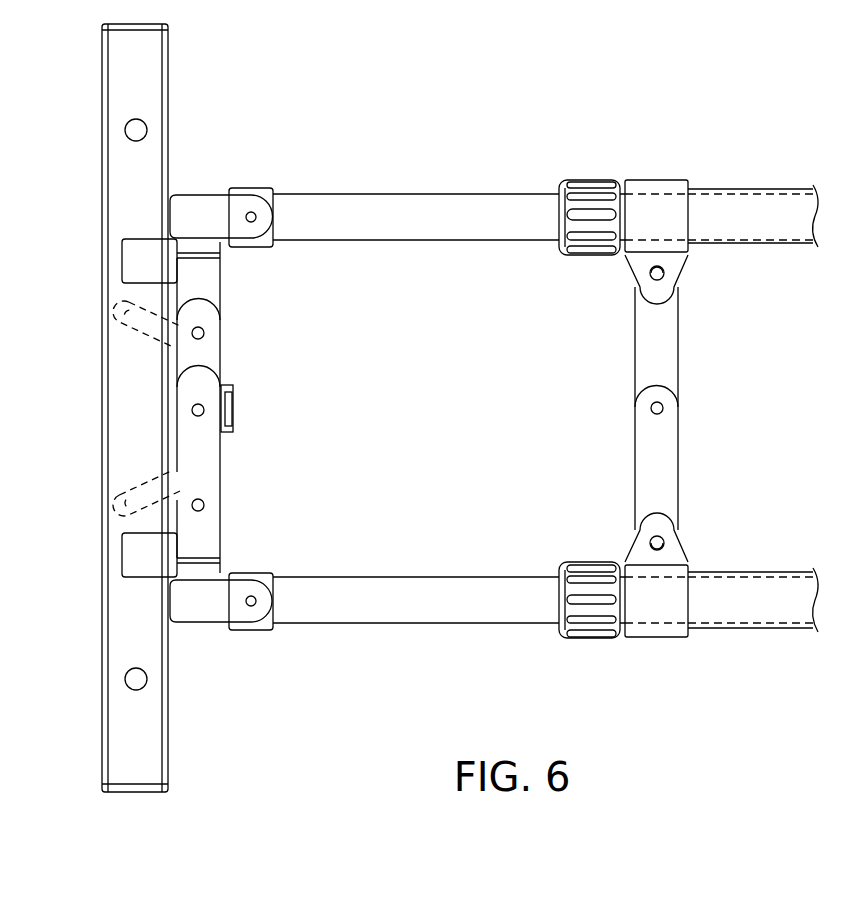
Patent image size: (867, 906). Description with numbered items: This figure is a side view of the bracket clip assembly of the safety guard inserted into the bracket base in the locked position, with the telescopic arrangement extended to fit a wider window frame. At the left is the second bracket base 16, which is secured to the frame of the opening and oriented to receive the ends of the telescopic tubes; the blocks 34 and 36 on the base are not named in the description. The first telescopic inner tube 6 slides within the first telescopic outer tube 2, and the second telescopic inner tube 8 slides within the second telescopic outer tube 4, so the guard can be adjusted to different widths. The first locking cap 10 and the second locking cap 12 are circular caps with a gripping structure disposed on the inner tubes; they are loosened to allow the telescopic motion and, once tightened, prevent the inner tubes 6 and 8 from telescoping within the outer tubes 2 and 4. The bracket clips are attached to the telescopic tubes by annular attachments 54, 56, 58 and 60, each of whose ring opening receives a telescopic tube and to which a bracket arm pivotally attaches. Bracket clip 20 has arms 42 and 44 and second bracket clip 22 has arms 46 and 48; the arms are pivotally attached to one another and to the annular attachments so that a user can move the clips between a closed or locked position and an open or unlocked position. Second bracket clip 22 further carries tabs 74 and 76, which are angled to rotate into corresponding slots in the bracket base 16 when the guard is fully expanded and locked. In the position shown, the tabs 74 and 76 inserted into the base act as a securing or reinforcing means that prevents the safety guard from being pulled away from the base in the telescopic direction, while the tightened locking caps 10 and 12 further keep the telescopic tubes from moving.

The first telescopic outer tube 2 is at (758, 193).
The second telescopic outer tube 4 is at (758, 630).
The first telescopic inner tube 6 is at (413, 202).
The second telescopic inner tube 8 is at (413, 618).
The first locking cap 10 is at (590, 183).
The second locking cap 12 is at (590, 638).
The second bracket base 16 is at (137, 72).
The bracket clip 20 is at (728, 401).
The second bracket clip 22 is at (272, 407).
The upper block 34 is at (143, 260).
The lower block 36 is at (143, 555).
The arm 42 is at (657, 330).
The arm 44 is at (687, 468).
The arm 46 is at (203, 285).
The arm 48 is at (228, 419).
The annular attachment 54 is at (660, 183).
The annular attachment 56 is at (660, 637).
The annular attachment 58 is at (258, 190).
The annular attachment 60 is at (257, 628).
The tab 74 is at (118, 316).
The tab 76 is at (120, 504).